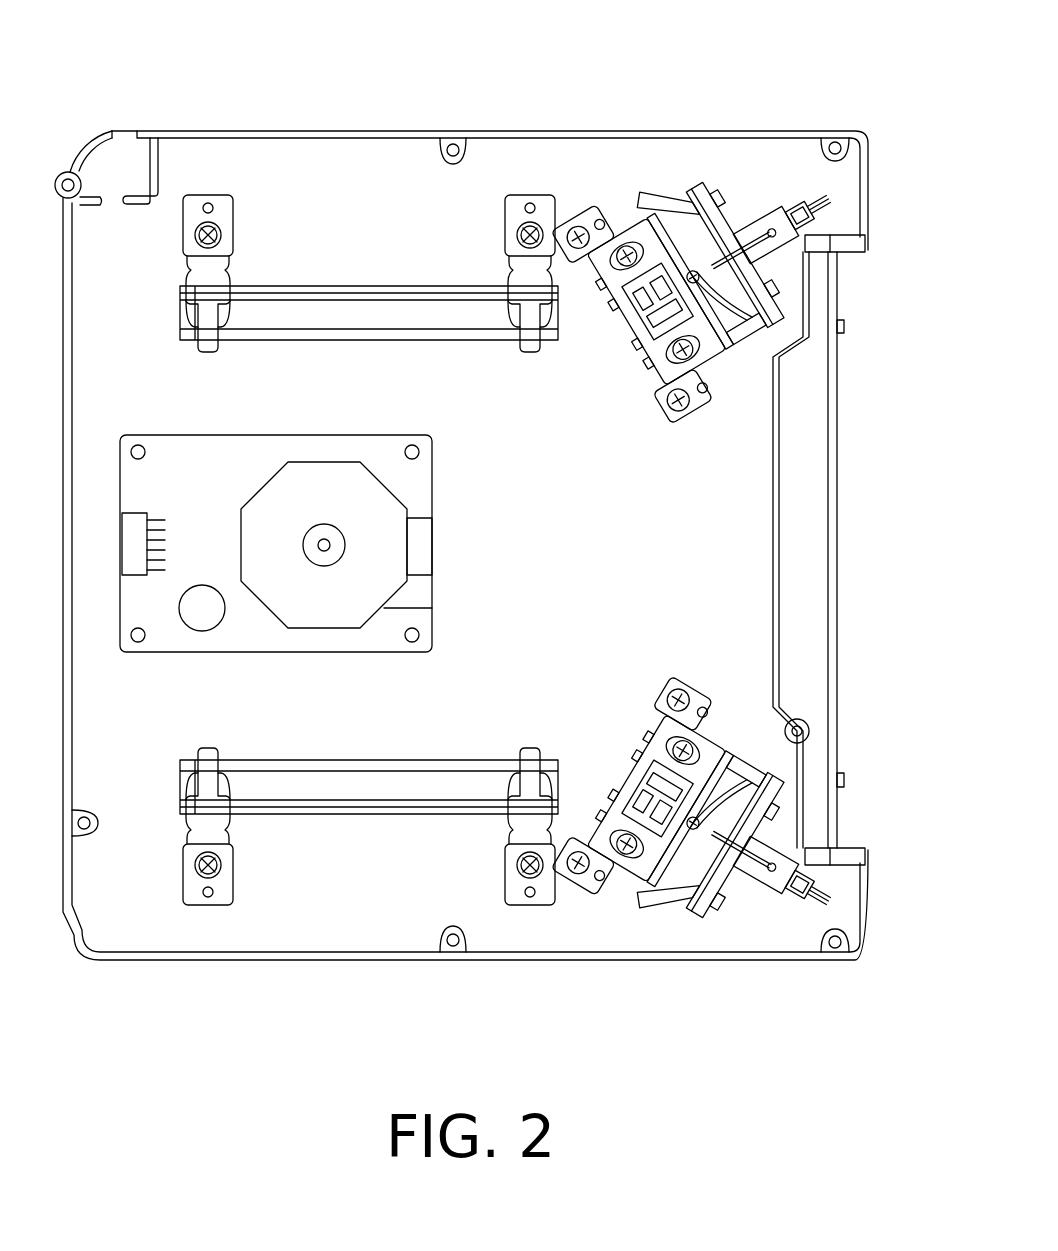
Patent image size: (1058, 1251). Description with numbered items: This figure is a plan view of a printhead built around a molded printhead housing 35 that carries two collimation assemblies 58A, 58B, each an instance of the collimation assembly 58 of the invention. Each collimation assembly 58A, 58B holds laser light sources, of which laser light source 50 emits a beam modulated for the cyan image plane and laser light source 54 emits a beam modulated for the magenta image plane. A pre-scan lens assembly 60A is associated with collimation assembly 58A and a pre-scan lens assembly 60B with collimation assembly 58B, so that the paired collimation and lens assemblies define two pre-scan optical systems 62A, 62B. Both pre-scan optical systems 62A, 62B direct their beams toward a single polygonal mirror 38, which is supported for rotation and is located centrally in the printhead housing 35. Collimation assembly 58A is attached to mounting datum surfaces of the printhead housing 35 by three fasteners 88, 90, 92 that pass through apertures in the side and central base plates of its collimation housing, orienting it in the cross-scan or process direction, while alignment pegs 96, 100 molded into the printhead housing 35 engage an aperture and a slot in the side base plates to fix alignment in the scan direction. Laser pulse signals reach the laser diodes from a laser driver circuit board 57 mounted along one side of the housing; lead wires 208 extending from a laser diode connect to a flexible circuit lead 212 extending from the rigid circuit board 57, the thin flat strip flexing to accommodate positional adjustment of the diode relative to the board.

The printhead housing 35 is at (414, 110).
The polygonal mirror 38 is at (323, 462).
The laser light source 50 is at (778, 160).
The laser light source 54 is at (772, 885).
The laser driver circuit board 57 is at (839, 528).
The collimation assembly 58 is at (622, 358).
The collimation assembly 58A is at (688, 172).
The collimation assembly 58B is at (688, 922).
The pre-scan lens assembly 60A is at (622, 226).
The pre-scan lens assembly 60B is at (605, 880).
The pre-scan optical system 62A is at (669, 295).
The pre-scan optical system 62B is at (658, 861).
The fastener 88 is at (672, 408).
The fastener 90 is at (578, 228).
The fastener 92 is at (698, 280).
The alignment peg 96 is at (710, 390).
The alignment peg 100 is at (597, 217).
The leads 208 is at (816, 200).
The flexible circuit lead 212 is at (850, 235).